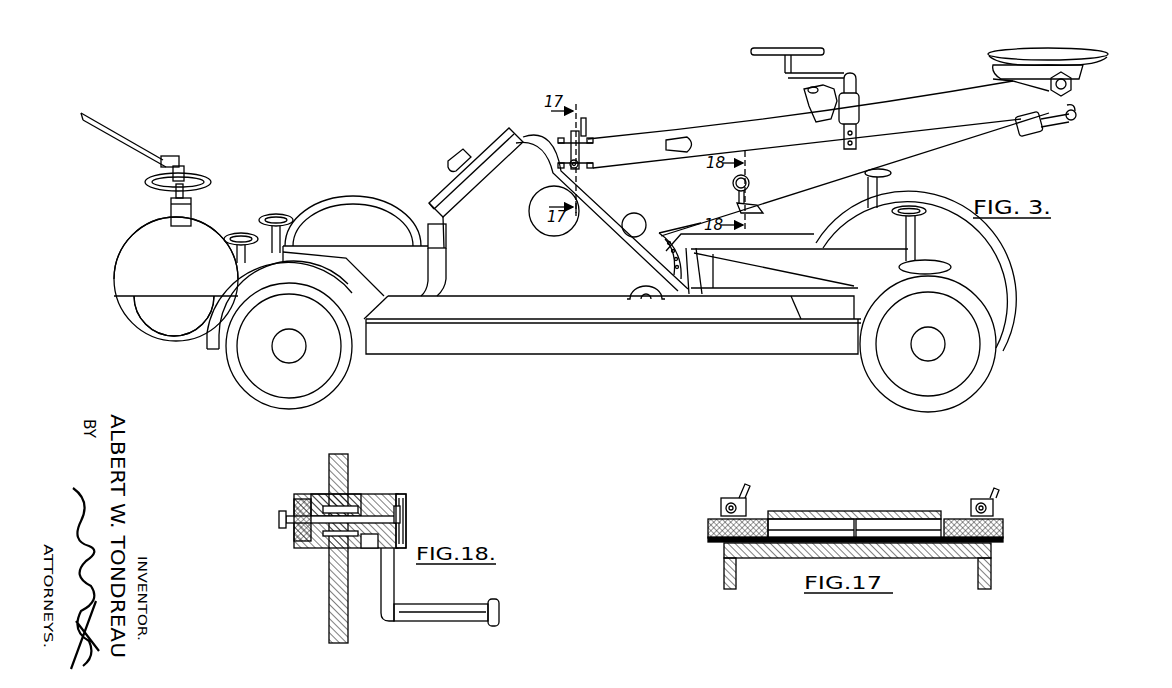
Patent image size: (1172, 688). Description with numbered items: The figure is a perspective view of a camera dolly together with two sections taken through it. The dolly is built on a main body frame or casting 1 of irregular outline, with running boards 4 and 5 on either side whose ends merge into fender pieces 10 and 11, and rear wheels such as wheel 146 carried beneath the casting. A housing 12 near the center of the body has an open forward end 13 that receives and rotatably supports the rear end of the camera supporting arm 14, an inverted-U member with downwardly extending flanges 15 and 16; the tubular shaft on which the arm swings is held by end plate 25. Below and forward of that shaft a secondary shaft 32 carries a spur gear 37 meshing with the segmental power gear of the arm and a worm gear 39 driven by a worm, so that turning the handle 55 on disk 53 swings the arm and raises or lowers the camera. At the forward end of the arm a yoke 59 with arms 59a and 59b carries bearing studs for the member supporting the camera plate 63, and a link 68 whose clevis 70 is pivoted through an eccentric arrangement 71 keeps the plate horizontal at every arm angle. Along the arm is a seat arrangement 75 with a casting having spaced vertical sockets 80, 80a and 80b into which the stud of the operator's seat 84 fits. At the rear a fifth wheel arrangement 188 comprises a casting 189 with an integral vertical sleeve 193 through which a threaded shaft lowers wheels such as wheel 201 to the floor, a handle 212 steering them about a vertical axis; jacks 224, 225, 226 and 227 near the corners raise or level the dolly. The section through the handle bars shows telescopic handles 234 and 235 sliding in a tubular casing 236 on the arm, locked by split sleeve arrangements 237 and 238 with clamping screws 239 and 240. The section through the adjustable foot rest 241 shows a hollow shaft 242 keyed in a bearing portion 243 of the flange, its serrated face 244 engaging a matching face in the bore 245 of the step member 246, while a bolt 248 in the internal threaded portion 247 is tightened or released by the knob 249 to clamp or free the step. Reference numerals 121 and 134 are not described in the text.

In FIG. 3, the main body frame 1 is at (416, 253).
In FIG. 3, the running board 4 is at (552, 316).
In FIG. 3, the running board 5 is at (760, 231).
In FIG. 3, the fender piece 10 is at (373, 232).
In FIG. 3, the fender piece 11 is at (927, 230).
In FIG. 3, the housing 12 is at (527, 255).
In FIG. 3, the open forward end 13 is at (548, 142).
In FIG. 3, the camera supporting arm 14 is at (913, 108).
In FIG. 17, the camera supporting arm 14 is at (785, 553).
In FIG. 3, the flange 15 is at (809, 186).
In FIG. 18, the flange 15 is at (347, 628).
In FIG. 17, the flange 15 is at (990, 577).
In FIG. 17, the flange 16 is at (723, 577).
In FIG. 3, the end plate 25 is at (556, 228).
In FIG. 3, the secondary shaft 32 is at (636, 299).
In FIG. 3, the spur gear 37 is at (670, 293).
In FIG. 3, the worm gear 39 is at (692, 222).
In FIG. 3, the disk 53 is at (508, 128).
In FIG. 3, the handle 55 is at (466, 158).
In FIG. 3, the yoke 59 is at (1000, 79).
In FIG. 3, the yoke arm 59a is at (1073, 90).
In FIG. 3, the yoke arm 59b is at (997, 62).
In FIG. 3, the camera plate 63 is at (1102, 56).
In FIG. 3, the link 68 is at (1016, 132).
In FIG. 3, the clevis 70 is at (1052, 127).
In FIG. 3, the eccentric arrangement 71 is at (1076, 119).
In FIG. 3, the seat arrangement 75 is at (863, 85).
In FIG. 3, the vertical socket 80 is at (858, 100).
In FIG. 3, the vertical socket 80a is at (806, 95).
In FIG. 3, the vertical socket 80b is at (847, 77).
In FIG. 3, the seat 84 is at (793, 48).
In FIG. 3, the seat frame 121 is at (478, 196).
In FIG. 3, the rear wheel 134 is at (878, 373).
In FIG. 3, the rear wheel 146 is at (312, 397).
In FIG. 3, the fifth wheel arrangement 188 is at (226, 214).
In FIG. 3, the casting 189 is at (122, 280).
In FIG. 3, the vertical sleeve 193 is at (170, 208).
In FIG. 3, the wheel 201 is at (170, 330).
In FIG. 3, the handle 212 is at (132, 142).
In FIG. 3, the jack 224 is at (232, 244).
In FIG. 3, the jack 225 is at (280, 213).
In FIG. 3, the jack 226 is at (926, 212).
In FIG. 3, the jack 227 is at (887, 173).
In FIG. 17, the telescopic handle 234 is at (797, 523).
In FIG. 17, the telescopic handle 235 is at (903, 525).
In FIG. 3, the tubular casing 236 is at (593, 140).
In FIG. 17, the tubular casing 236 is at (845, 513).
In FIG. 17, the split sleeve arrangement 237 is at (722, 510).
In FIG. 17, the split sleeve arrangement 238 is at (962, 510).
In FIG. 3, the clamping screw member 239 is at (585, 133).
In FIG. 17, the clamping screw member 239 is at (746, 495).
In FIG. 3, the clamping screw member 240 is at (580, 161).
In FIG. 17, the clamping screw member 240 is at (996, 497).
In FIG. 3, the adjustable foot rest 241 is at (753, 190).
In FIG. 18, the adjustable foot rest 241 is at (438, 511).
In FIG. 18, the hollow shaft 242 is at (320, 537).
In FIG. 18, the bearing portion 243 is at (357, 503).
In FIG. 18, the serrated face 244 is at (365, 539).
In FIG. 18, the bore 245 is at (370, 502).
In FIG. 18, the step member 246 is at (392, 580).
In FIG. 18, the internal threaded portion 247 is at (401, 503).
In FIG. 18, the bolt 248 is at (298, 528).
In FIG. 18, the knob 249 is at (405, 522).